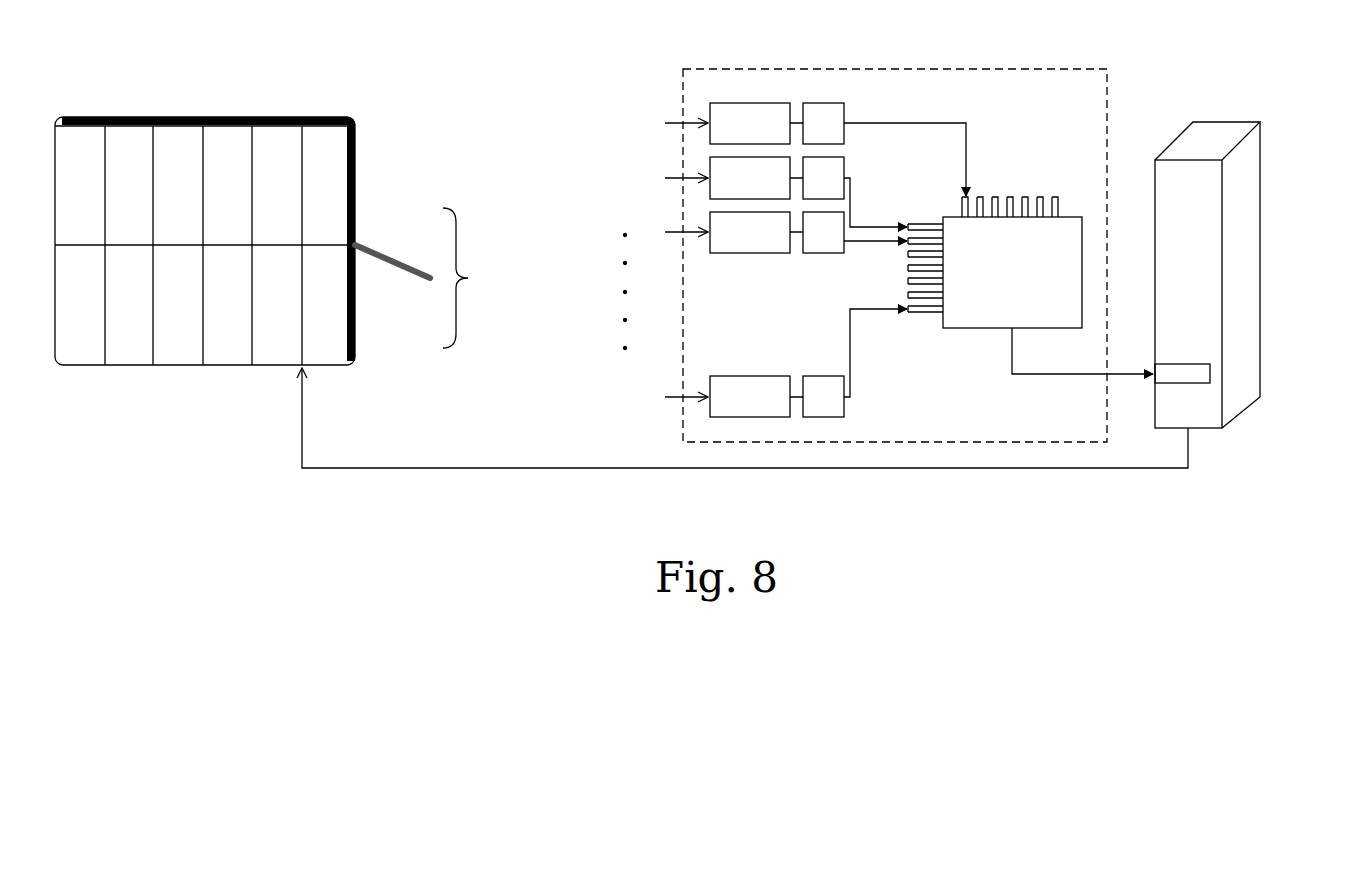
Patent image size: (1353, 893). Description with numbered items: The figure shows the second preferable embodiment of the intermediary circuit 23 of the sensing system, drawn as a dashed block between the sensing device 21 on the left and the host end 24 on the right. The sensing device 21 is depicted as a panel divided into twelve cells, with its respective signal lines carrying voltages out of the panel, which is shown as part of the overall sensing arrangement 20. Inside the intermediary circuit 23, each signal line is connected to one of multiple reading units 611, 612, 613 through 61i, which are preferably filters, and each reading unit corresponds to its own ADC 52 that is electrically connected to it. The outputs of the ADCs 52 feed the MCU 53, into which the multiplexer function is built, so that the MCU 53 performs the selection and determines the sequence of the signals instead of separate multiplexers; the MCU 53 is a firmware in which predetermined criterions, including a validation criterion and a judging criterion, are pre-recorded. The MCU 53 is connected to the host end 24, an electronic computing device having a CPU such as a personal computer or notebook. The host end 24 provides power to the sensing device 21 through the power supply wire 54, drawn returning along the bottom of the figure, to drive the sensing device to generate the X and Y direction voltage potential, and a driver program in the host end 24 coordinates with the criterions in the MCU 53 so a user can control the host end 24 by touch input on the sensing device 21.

The touch sensing panel 20 is at (190, 450).
The sensing device 21 is at (204, 117).
The intermediary circuit 23 is at (895, 68).
The host end 24 is at (1260, 255).
The ADC 52 is at (817, 260).
The MCU 53 is at (995, 262).
The power supply wire 54 is at (563, 466).
The reading unit 611 is at (750, 123).
The reading unit 612 is at (750, 178).
The reading unit 613 is at (750, 232).
The reading unit 61i is at (750, 396).